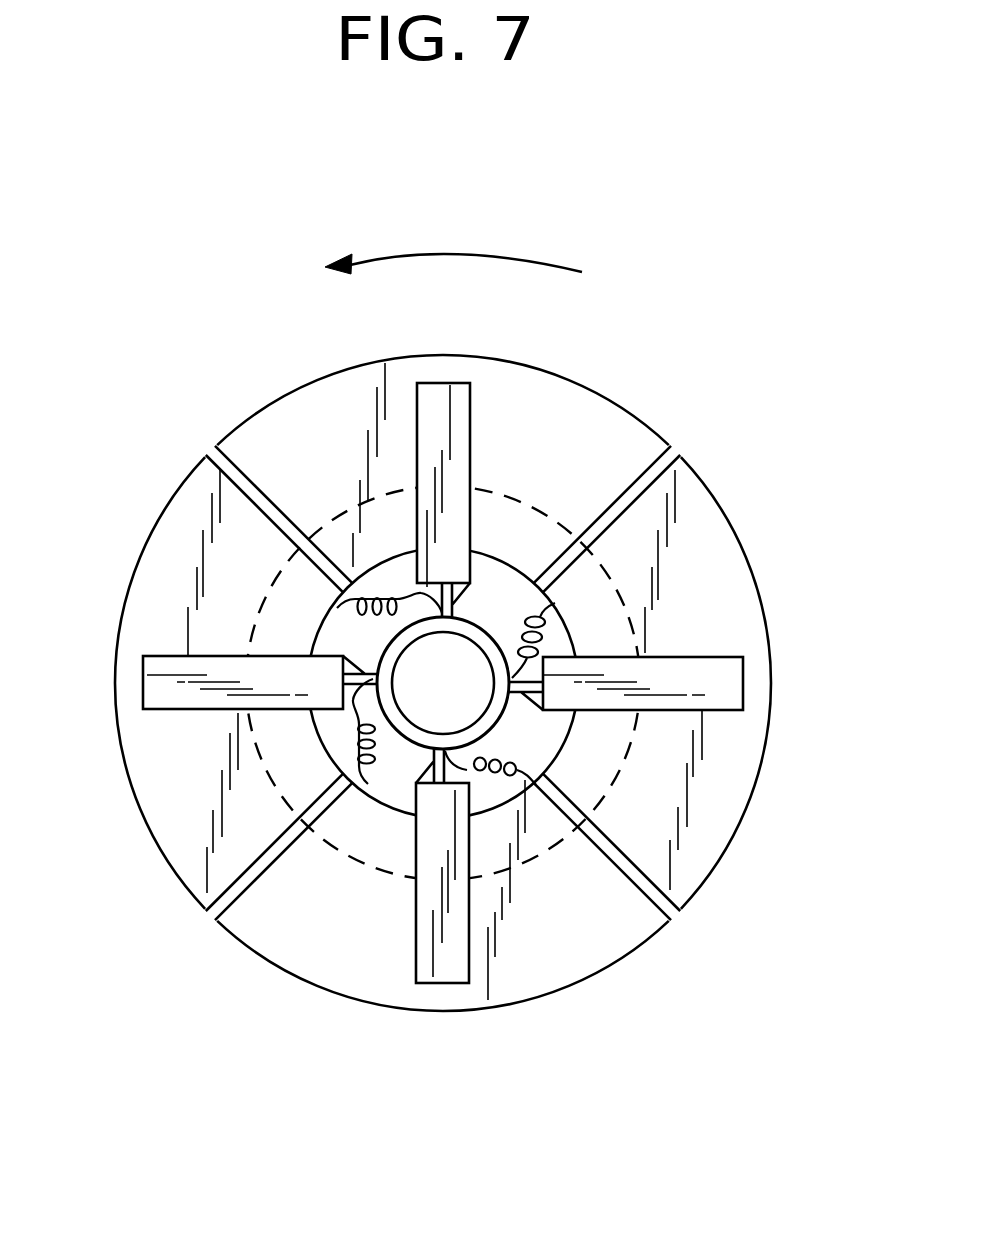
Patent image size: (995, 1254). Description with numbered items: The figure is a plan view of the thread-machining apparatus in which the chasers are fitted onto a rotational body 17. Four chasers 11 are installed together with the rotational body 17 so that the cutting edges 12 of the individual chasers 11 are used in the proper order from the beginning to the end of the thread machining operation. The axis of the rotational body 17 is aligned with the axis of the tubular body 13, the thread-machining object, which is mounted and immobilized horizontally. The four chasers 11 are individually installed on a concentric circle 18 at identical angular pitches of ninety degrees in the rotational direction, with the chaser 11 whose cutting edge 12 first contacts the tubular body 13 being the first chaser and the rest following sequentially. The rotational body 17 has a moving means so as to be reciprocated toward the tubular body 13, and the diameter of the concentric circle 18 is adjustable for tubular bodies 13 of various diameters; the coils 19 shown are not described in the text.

The chaser 11 is at (457, 428).
The cutting edge 12 is at (455, 603).
The tubular body 13 is at (413, 730).
The rotational body 17 is at (532, 952).
The concentric circle 18 is at (623, 770).
The coil winding 19 is at (363, 733).